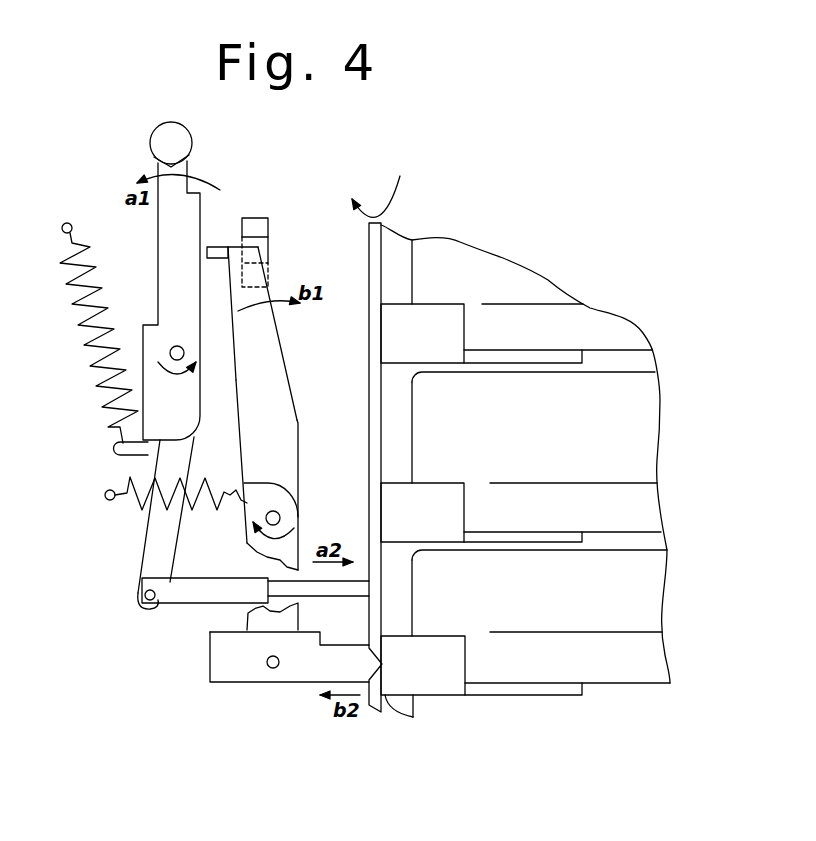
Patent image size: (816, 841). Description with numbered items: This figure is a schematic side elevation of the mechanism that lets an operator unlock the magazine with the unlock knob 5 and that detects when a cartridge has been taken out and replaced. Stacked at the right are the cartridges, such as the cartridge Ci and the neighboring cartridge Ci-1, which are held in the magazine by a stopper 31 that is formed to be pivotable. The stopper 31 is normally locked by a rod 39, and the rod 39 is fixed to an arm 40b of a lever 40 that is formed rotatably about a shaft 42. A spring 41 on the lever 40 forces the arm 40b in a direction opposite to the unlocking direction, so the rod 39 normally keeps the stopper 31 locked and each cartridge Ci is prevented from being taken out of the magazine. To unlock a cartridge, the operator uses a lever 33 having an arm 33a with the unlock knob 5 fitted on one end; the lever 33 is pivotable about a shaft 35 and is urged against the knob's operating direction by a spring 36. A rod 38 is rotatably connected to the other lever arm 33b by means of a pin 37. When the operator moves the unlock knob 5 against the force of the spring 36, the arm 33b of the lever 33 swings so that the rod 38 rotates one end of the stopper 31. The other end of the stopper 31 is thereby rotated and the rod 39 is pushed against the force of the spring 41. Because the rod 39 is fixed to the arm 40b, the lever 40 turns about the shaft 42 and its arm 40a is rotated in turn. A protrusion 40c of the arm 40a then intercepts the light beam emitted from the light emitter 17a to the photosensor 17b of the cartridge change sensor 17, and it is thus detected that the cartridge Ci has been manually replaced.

The unlock knob 5 is at (190, 137).
The cartridge change sensor 17 is at (305, 234).
The light emitter 17a is at (272, 239).
The photosensor 17b is at (268, 264).
The stopper 31 is at (442, 310).
The lever 33 is at (152, 255).
The arm 33a is at (212, 240).
The arm 33b is at (155, 542).
The shaft 35 is at (167, 352).
The spring 36 is at (78, 302).
The pin 37 is at (143, 602).
The rod 38 is at (179, 604).
The rod 39 is at (256, 680).
The lever 40 is at (264, 444).
The arm 40a is at (266, 351).
The arm 40b is at (213, 632).
The protrusion 40c is at (226, 246).
The spring 41 is at (227, 498).
The shaft 42 is at (280, 513).
The cartridge Ci is at (653, 408).
The cassette unit C(i-1) Ci-1 is at (658, 573).